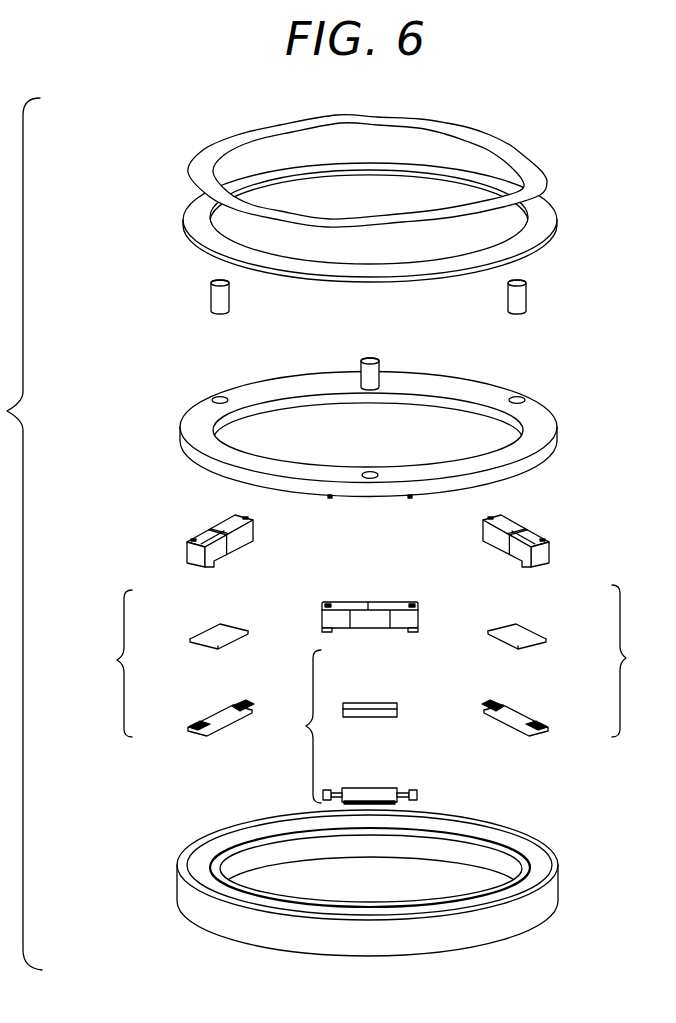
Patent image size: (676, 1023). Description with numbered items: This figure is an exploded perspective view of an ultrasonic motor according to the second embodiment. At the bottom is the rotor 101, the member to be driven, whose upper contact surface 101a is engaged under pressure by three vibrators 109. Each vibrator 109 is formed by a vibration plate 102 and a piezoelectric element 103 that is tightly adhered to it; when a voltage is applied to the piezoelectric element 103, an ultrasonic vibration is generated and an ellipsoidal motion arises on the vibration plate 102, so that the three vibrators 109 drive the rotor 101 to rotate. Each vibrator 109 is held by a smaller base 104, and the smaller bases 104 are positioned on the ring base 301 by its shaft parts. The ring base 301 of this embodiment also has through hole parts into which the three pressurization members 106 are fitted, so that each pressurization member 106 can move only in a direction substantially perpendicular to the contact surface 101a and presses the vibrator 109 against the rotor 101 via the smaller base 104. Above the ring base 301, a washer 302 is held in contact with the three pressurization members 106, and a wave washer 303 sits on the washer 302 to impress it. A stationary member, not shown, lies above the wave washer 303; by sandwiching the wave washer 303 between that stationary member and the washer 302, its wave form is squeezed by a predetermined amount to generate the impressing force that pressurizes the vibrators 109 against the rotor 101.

The rotor 101 is at (527, 912).
The contact surface 101a is at (532, 872).
The vibration plate 102 is at (215, 718).
The piezoelectric element 103 is at (218, 633).
The smaller base 104 is at (196, 530).
The pressurization member 106 is at (212, 298).
The vibrator 109 is at (371, 694).
The ring base 301 is at (540, 423).
The washer 302 is at (543, 220).
The wave washer 303 is at (537, 168).